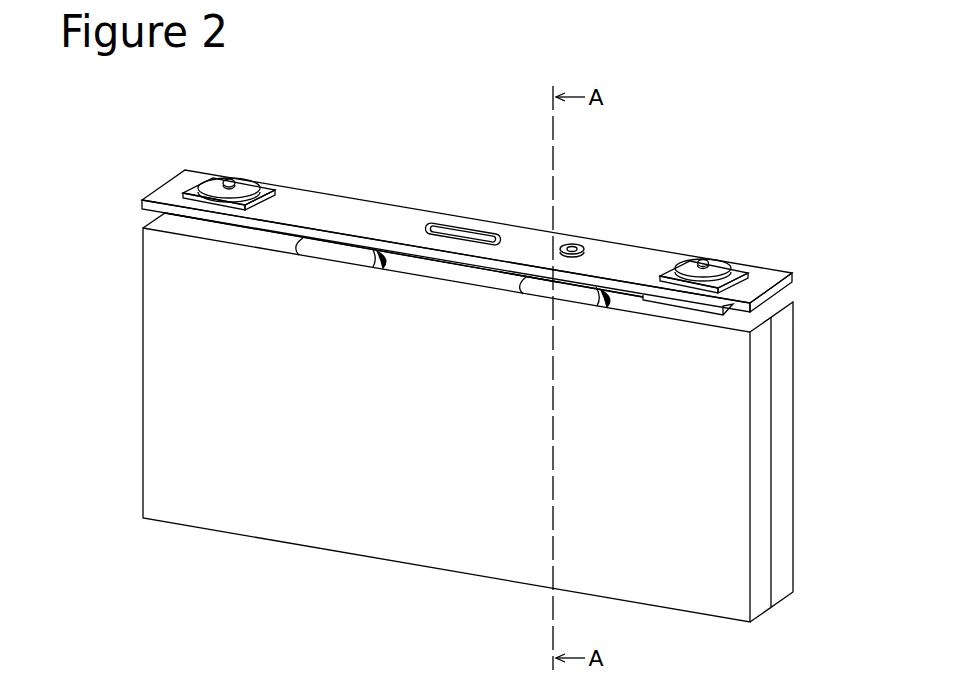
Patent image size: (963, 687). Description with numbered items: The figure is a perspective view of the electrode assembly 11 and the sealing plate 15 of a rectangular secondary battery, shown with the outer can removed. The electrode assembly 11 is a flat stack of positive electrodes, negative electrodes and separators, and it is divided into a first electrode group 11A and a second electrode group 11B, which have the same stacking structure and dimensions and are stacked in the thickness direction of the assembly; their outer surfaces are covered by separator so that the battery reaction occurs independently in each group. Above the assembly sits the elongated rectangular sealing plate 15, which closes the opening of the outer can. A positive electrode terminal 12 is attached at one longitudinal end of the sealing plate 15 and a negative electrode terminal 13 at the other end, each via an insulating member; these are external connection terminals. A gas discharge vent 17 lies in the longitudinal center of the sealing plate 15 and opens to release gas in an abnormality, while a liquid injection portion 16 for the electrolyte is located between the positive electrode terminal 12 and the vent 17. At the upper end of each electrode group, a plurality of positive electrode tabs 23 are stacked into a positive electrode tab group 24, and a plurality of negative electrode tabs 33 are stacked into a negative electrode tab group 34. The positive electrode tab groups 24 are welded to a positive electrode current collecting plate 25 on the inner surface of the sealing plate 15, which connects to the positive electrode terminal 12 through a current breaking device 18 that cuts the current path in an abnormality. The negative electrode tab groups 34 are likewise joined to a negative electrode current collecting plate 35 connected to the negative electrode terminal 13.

The electrode assembly 11 is at (461, 417).
The first electrode group 11A is at (763, 447).
The second electrode group 11B is at (782, 395).
The positive electrode terminal 12 is at (703, 259).
The negative electrode terminal 13 is at (229, 179).
The sealing plate 15 is at (380, 217).
The liquid injection portion 16 is at (573, 244).
The gas discharge vent 17 is at (467, 228).
The current breaking device 18 is at (650, 297).
The positive electrode tab 23 is at (582, 287).
The positive electrode tab group 24 is at (588, 213).
The positive electrode current collecting plate 25 is at (535, 283).
The negative electrode tab 33 is at (331, 250).
The negative electrode tab group 34 is at (340, 195).
The negative electrode current collecting plate 35 is at (290, 236).